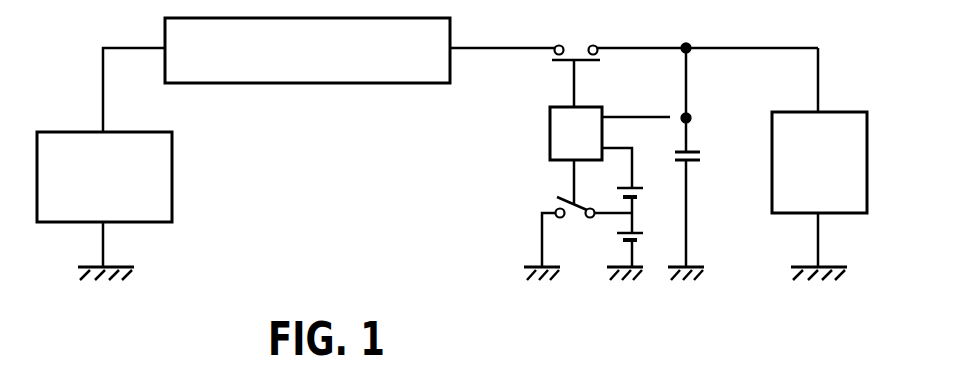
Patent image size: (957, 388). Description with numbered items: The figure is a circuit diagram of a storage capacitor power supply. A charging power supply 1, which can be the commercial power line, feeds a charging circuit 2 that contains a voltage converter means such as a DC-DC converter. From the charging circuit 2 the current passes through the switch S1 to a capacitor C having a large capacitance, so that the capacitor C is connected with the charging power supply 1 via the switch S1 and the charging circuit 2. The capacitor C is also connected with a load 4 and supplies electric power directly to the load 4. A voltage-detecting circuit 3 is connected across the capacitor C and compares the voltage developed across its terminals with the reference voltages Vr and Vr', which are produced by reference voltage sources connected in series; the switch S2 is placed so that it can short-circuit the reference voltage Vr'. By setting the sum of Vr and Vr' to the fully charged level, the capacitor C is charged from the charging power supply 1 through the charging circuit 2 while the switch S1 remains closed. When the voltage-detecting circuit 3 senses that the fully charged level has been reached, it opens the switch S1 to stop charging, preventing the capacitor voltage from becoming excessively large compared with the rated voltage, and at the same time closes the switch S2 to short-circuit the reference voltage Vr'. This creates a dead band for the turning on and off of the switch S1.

The charging power supply 1 is at (172, 170).
The charging circuit 2 is at (287, 85).
The voltage-detecting circuit 3 is at (548, 128).
The load 4 is at (868, 134).
The switch S1 is at (576, 36).
The switch S2 is at (575, 224).
The capacitor C is at (699, 159).
The reference voltage Vr is at (645, 191).
The reference voltage Vr' is at (647, 233).